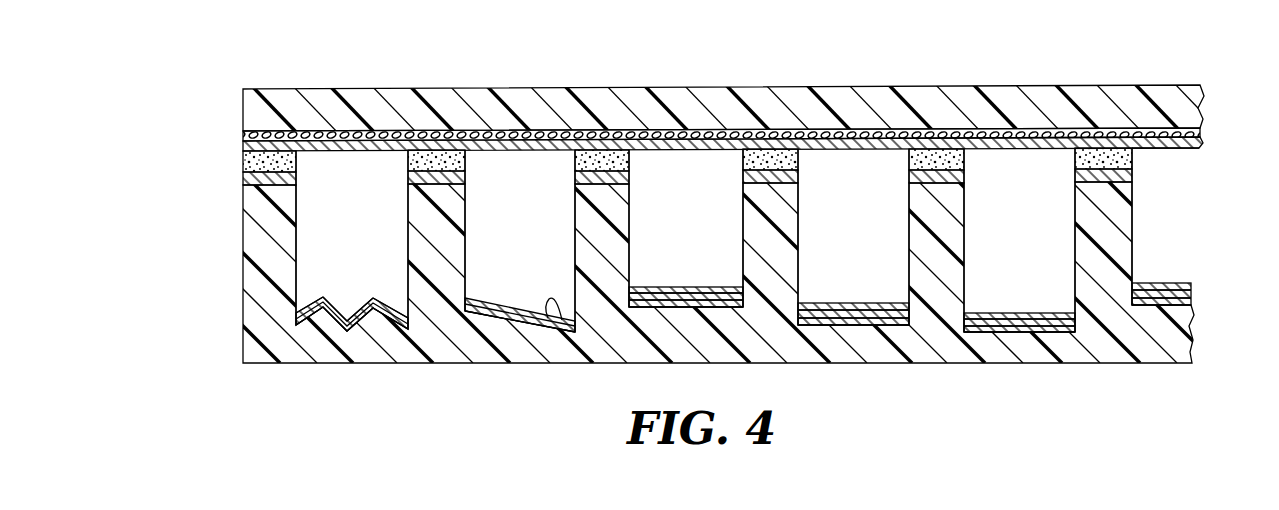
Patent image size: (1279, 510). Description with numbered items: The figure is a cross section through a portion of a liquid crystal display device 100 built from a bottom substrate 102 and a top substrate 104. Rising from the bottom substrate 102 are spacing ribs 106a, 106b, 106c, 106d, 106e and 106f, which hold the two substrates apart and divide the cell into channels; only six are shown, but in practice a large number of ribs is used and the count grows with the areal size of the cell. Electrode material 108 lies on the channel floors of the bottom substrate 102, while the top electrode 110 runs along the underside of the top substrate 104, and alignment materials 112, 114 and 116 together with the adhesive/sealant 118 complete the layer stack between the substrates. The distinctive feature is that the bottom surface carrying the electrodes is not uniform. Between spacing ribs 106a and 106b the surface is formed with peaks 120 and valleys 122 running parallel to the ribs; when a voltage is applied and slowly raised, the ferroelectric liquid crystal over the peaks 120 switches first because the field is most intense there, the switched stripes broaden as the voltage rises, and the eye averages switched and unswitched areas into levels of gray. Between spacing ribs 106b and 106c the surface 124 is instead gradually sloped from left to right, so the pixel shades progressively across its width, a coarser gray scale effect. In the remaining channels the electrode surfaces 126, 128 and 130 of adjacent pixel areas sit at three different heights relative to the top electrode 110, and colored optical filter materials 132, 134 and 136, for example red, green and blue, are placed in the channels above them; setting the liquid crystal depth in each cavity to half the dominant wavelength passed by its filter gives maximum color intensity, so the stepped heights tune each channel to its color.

The display device 100 is at (275, 72).
The bottom substrate 102 is at (478, 352).
The top substrate 104 is at (465, 95).
The spacing rib 106a is at (288, 235).
The spacing rib 106b is at (520, 241).
The spacing rib 106c is at (625, 207).
The spacing rib 106d is at (795, 225).
The spacing rib 106e is at (958, 230).
The spacing rib 106f is at (1122, 214).
The electrode material 108 is at (308, 320).
The top electrode 110 is at (243, 135).
The alignment material 112 is at (322, 297).
The alignment material 114 is at (243, 144).
The alignment material 116 is at (242, 178).
The adhesive/sealant 118 is at (243, 162).
The peaks 120 is at (327, 318).
The valleys 122 is at (352, 330).
The surface 124 is at (562, 322).
The electrode surface 126 is at (660, 302).
The electrode surface 128 is at (833, 315).
The electrode surface 130 is at (990, 322).
The colored optical filter material 132 is at (980, 316).
The colored optical filter material 134 is at (813, 305).
The colored optical filter material 136 is at (650, 287).